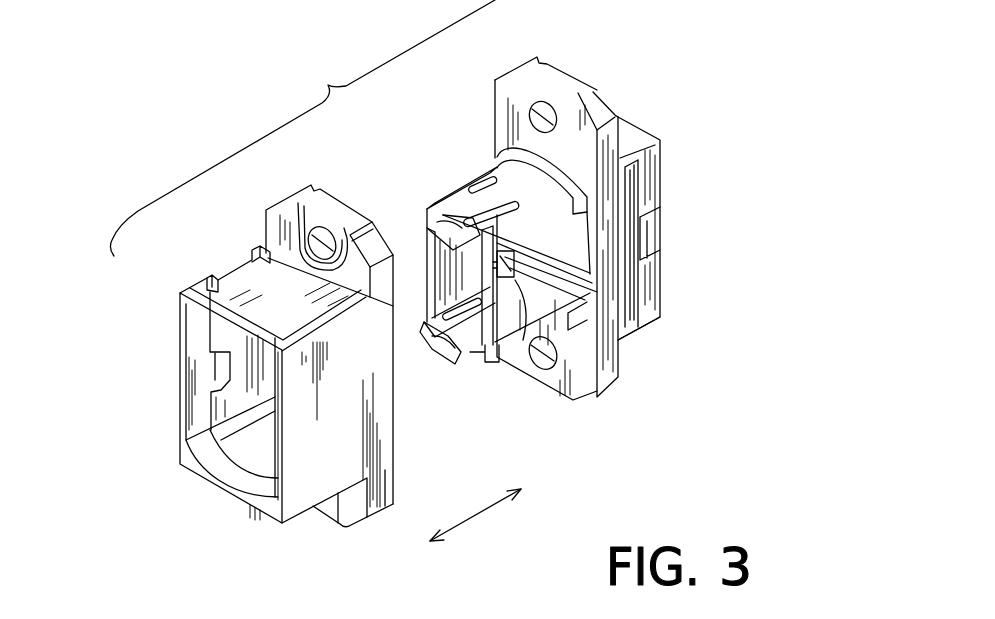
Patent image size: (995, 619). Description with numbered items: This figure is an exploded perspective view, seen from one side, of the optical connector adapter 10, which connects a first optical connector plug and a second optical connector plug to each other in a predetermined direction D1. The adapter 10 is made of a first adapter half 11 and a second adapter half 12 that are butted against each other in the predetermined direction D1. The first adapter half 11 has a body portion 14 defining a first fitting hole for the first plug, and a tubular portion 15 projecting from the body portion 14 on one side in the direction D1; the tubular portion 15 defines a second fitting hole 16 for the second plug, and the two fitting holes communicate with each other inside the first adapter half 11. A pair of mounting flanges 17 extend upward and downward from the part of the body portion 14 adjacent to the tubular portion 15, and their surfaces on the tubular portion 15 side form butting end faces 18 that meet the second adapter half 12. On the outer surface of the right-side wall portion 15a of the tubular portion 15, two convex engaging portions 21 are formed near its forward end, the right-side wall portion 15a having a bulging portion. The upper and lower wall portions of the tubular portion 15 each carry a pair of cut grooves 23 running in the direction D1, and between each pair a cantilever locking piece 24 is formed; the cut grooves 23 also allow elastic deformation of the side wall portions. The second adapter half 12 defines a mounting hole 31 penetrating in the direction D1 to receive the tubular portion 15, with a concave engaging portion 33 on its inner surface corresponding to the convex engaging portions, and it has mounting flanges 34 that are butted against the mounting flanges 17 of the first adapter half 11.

The optical connector adapter 10 is at (302, 128).
The first adapter half 11 is at (650, 327).
The second adapter half 12 is at (312, 508).
The body portion 14 is at (622, 341).
The tubular portion 15 is at (492, 350).
The right-side wall portion 15a is at (575, 291).
The second fitting hole 16 is at (445, 285).
The mounting flanges 17 is at (507, 72).
The butting end faces 18 is at (503, 108).
The engaging portions 21 is at (522, 338).
The cut grooves 23 is at (492, 213).
The cantilever locking piece 24 is at (430, 204).
The mounting hole 31 is at (238, 448).
The engaging portion 33 is at (222, 377).
The mounting flanges 34 is at (320, 200).
The predetermined direction D1 is at (482, 513).